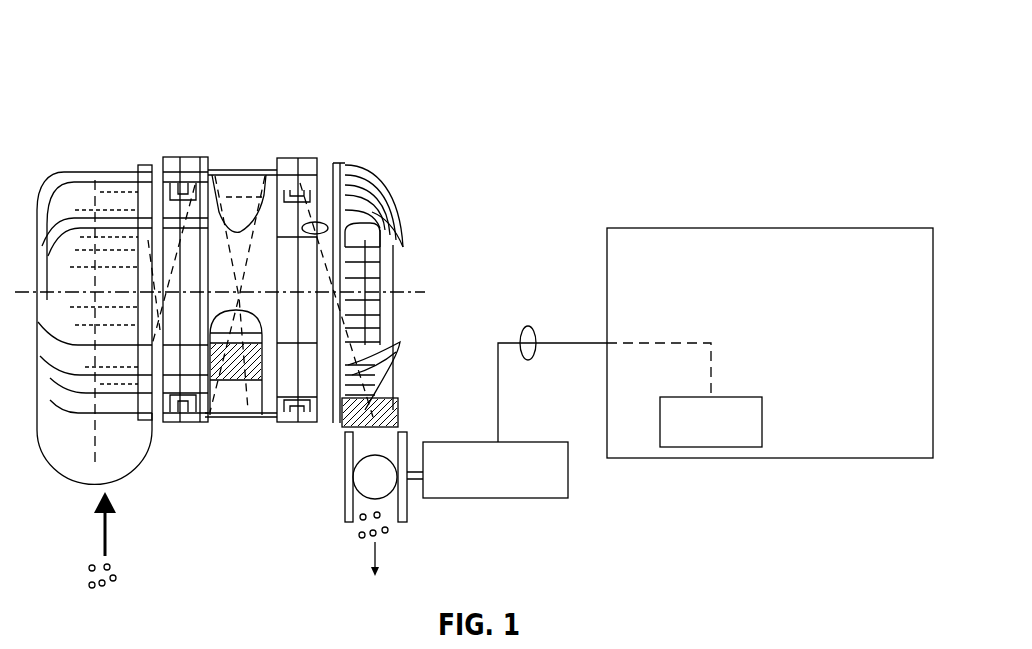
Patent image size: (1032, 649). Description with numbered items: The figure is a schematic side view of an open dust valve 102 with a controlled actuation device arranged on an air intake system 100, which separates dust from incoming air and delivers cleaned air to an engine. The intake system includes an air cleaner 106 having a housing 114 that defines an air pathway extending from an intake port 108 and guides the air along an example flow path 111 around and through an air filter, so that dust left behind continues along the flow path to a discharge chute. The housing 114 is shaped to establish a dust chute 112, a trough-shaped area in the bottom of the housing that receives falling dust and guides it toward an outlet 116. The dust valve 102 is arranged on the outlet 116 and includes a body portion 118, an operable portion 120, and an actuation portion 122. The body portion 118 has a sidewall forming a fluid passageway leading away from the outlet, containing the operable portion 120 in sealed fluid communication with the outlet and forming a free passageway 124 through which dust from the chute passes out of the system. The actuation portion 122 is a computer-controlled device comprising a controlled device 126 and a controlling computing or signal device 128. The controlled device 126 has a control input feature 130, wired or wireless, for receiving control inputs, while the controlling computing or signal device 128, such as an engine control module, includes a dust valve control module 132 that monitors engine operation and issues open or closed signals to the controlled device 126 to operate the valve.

The air intake system 100 is at (150, 48).
The dust valve 102 is at (318, 530).
The air cleaner 106 is at (250, 155).
The intake port 108 is at (97, 485).
The flow path 111 is at (318, 222).
The dust chute 112 is at (398, 392).
The housing 114 is at (82, 167).
The outlet 116 is at (398, 418).
The body portion 118 is at (345, 478).
The operable portion 120 is at (382, 485).
The actuation portion 122 is at (540, 505).
The free passageway 124 is at (362, 447).
The controlled device 126 is at (515, 483).
The controlling computing or signal device 128 is at (842, 297).
The control input feature 130 is at (530, 327).
The dust valve control module 132 is at (732, 437).